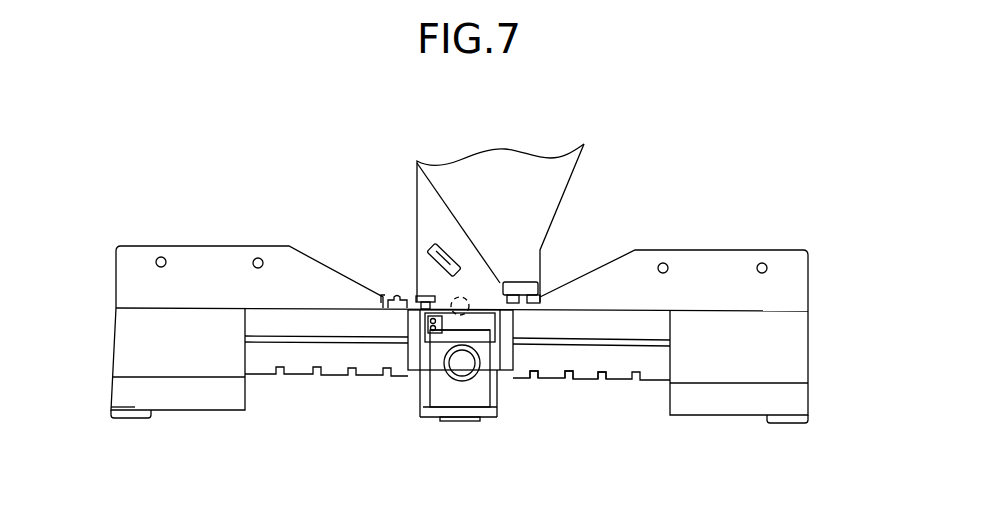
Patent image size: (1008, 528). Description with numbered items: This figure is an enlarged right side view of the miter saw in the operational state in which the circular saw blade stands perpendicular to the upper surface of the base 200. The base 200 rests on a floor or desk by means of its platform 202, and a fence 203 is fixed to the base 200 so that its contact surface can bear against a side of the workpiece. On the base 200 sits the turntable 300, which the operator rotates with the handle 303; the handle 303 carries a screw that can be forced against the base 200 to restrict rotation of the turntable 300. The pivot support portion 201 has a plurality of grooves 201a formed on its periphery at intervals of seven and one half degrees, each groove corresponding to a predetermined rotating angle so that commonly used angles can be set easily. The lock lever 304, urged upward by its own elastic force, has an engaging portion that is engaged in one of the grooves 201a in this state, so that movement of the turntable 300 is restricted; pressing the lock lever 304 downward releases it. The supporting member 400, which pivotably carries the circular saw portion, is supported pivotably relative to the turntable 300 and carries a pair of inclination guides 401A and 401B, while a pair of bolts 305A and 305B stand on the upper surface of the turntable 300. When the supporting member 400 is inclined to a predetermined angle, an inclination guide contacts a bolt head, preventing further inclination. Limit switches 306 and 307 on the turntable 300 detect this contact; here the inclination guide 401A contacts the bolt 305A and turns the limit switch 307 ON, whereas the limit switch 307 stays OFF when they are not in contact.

The base 200 is at (183, 345).
The pivot support portion 201 is at (337, 368).
The grooves 201a is at (538, 380).
The platform 202 is at (127, 393).
The fence 203 is at (218, 258).
The turntable 300 is at (285, 327).
The handle 303 is at (462, 368).
The lock lever 304 is at (425, 405).
The bolt 305A is at (417, 170).
The bolt 305B is at (416, 293).
The limit switch 306 is at (390, 297).
The limit switch 307 is at (543, 295).
The supporting member 400 is at (508, 188).
The inclination guide 401A is at (523, 283).
The inclination guide 401B is at (427, 250).